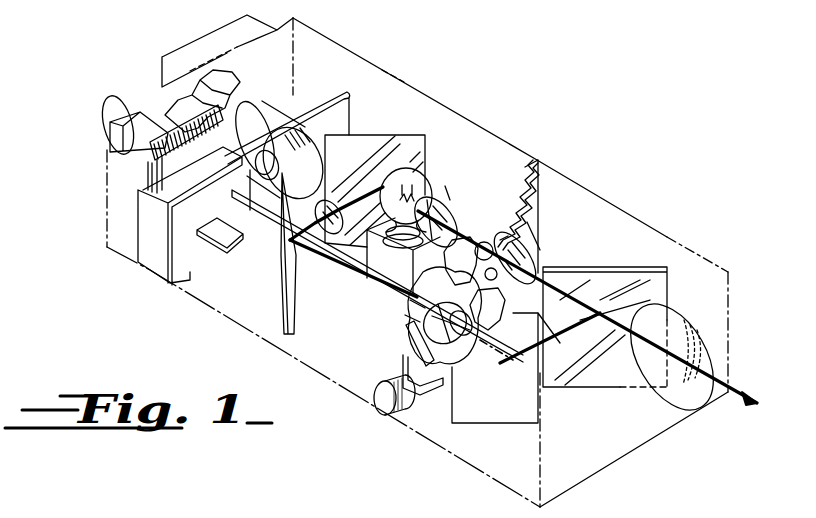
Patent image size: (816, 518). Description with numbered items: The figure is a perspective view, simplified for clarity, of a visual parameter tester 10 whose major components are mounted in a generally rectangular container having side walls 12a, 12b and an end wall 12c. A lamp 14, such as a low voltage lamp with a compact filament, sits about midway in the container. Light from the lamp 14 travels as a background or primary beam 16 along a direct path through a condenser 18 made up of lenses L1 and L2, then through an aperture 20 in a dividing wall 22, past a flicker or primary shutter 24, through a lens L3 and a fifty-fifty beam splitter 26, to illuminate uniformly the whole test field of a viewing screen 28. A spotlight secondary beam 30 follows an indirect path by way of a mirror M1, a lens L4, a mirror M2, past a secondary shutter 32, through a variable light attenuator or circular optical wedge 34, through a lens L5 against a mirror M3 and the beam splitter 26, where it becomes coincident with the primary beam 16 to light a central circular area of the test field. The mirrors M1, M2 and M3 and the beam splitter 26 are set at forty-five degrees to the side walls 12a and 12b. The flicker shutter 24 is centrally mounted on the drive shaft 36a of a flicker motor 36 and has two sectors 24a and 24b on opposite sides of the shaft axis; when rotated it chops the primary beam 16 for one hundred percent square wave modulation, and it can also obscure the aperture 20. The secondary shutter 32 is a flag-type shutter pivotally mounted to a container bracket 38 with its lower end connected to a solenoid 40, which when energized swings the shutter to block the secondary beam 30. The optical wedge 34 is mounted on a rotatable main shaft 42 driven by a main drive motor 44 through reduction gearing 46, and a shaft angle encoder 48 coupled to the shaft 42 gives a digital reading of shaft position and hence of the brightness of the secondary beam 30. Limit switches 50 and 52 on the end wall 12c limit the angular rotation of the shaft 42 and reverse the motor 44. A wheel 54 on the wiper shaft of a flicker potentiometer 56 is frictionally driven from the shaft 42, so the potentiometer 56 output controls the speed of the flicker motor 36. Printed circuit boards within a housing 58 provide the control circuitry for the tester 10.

The visual parameter tester 10 is at (640, 146).
The side wall 12a is at (410, 85).
The side wall 12b is at (237, 325).
The end wall 12c is at (150, 90).
The lamp 14 is at (425, 172).
The primary beam 16 is at (540, 262).
The condenser 18 is at (442, 196).
The aperture 20 is at (543, 190).
The dividing wall 22 is at (528, 163).
The flicker shutter 24 is at (450, 263).
The sector 24a is at (535, 225).
The sector 24b is at (477, 287).
The beam splitter 26 is at (637, 270).
The viewing screen 28 is at (705, 332).
The secondary beam 30 is at (365, 277).
The secondary shutter 32 is at (407, 338).
The optical wedge 34 is at (410, 308).
The flicker motor 36 is at (485, 242).
The drive shaft 36a is at (497, 280).
The container bracket 38 is at (403, 363).
The solenoid 40 is at (387, 412).
The main shaft 42 is at (273, 222).
The main drive motor 44 is at (297, 110).
The reduction gearing 46 is at (149, 153).
The shaft angle encoder 48 is at (112, 106).
The limit switch 50 is at (122, 130).
The limit switch 52 is at (223, 83).
The wheel 54 is at (252, 107).
The flicker potentiometer 56 is at (349, 92).
The housing 58 is at (203, 33).
The lens L1 is at (440, 192).
The lens L2 is at (511, 230).
The lens L3 is at (535, 240).
The lens L4 is at (330, 201).
The lens L5 is at (463, 358).
The mirror M1 is at (380, 135).
The mirror M2 is at (297, 290).
The mirror M3 is at (477, 427).